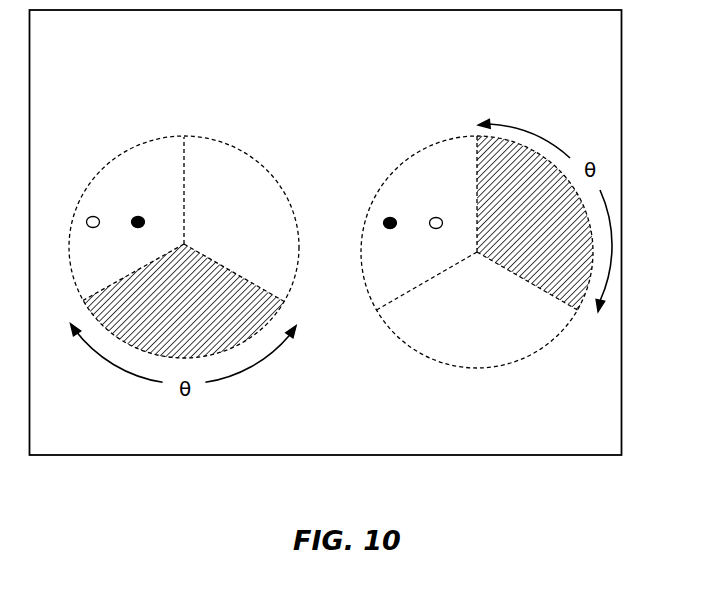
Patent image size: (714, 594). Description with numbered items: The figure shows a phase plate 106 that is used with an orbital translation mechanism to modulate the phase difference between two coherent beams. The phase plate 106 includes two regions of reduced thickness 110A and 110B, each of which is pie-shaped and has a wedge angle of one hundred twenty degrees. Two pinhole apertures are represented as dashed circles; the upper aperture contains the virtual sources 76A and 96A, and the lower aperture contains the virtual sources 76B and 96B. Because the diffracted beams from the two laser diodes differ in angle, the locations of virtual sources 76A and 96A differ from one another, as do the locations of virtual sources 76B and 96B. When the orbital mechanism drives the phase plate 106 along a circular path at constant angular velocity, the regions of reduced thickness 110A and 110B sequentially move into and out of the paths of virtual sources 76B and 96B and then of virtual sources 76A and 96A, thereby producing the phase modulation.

The phase plate 106 is at (621, 97).
The virtual source 96A is at (96, 216).
The virtual source 76A is at (141, 216).
The region of reduced thickness 110A is at (213, 345).
The virtual source 96B is at (438, 218).
The virtual source 76B is at (393, 218).
The region of reduced thickness 110B is at (532, 167).